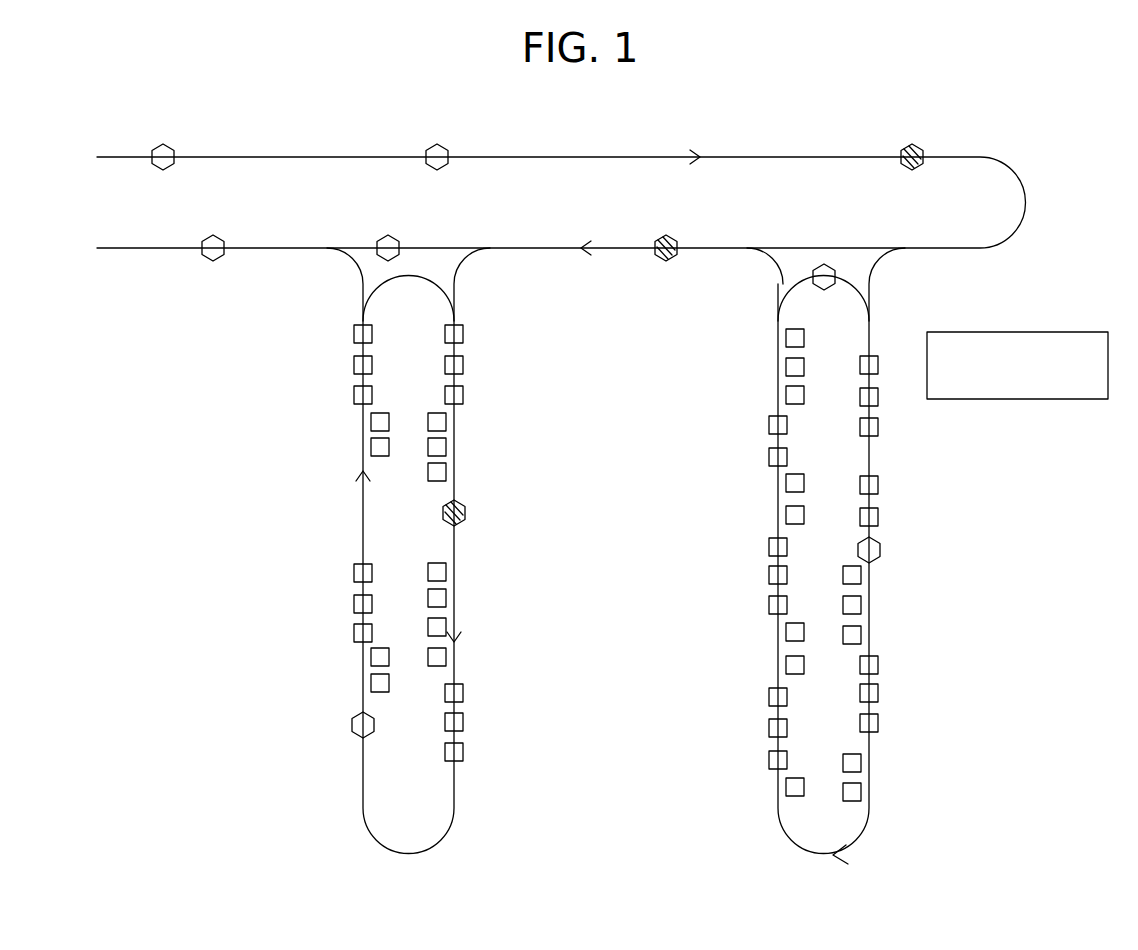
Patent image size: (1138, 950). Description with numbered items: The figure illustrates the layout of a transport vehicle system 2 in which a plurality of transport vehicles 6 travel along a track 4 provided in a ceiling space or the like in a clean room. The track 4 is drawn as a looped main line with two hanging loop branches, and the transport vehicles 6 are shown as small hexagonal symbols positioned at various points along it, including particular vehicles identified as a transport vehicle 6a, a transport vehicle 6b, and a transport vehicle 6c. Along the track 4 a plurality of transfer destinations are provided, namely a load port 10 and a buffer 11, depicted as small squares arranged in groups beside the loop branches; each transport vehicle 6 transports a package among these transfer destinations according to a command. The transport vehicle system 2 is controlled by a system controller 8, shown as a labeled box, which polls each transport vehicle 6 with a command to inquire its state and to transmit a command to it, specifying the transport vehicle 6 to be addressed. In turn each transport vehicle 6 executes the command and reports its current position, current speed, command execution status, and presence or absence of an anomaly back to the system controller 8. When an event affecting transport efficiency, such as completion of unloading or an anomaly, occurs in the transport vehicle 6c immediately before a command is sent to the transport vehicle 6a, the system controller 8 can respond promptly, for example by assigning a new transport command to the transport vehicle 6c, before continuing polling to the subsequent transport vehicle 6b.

The transport vehicle system 2 is at (573, 926).
The track 4 is at (800, 156).
The transport vehicle 6 is at (168, 143).
The transport vehicle 6a is at (921, 148).
The transport vehicle 6b is at (662, 262).
The transport vehicle 6c is at (466, 509).
The system controller 8 is at (1030, 400).
The load port 10 is at (354, 395).
The buffer 11 is at (371, 447).